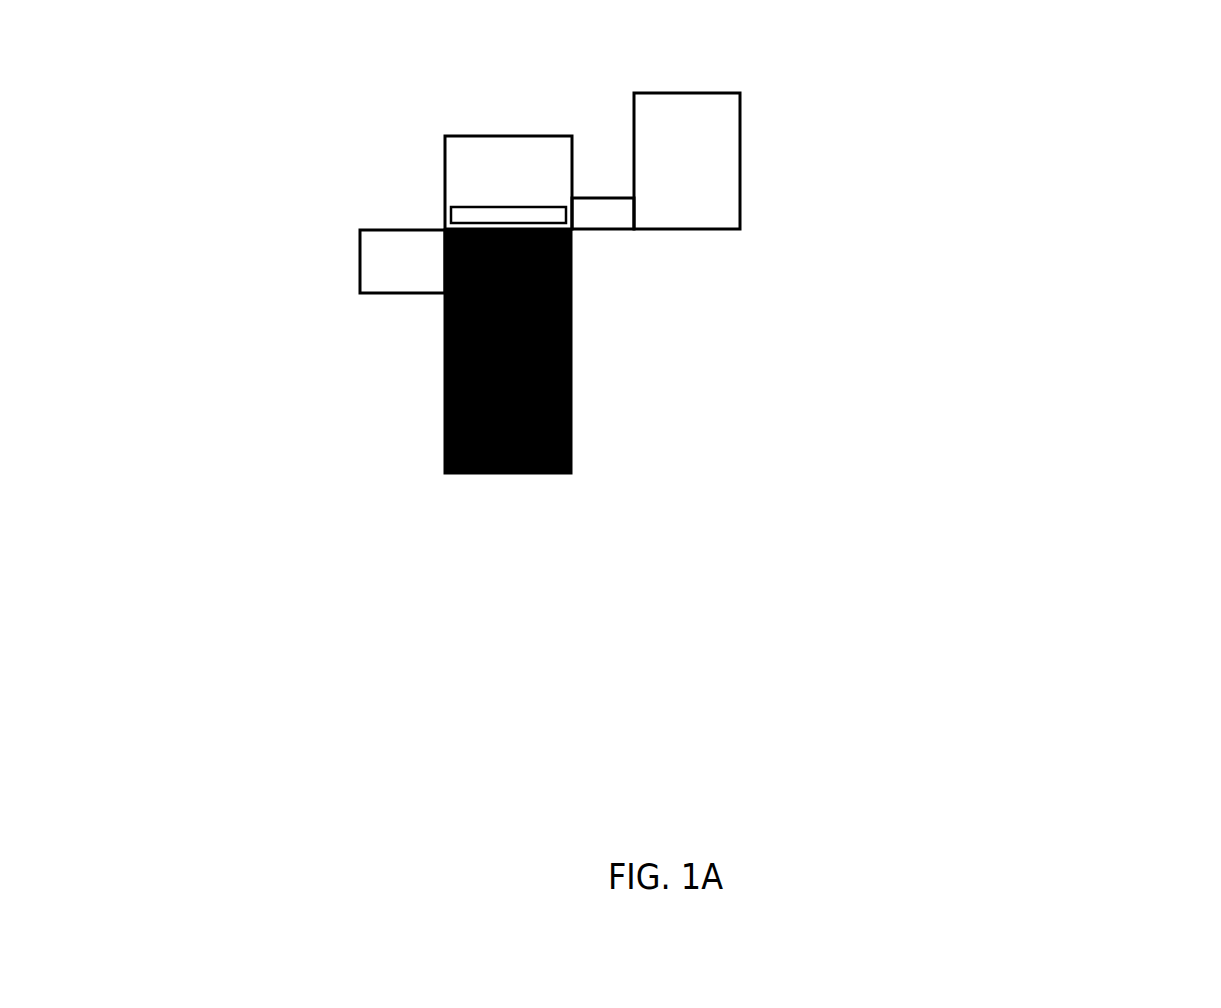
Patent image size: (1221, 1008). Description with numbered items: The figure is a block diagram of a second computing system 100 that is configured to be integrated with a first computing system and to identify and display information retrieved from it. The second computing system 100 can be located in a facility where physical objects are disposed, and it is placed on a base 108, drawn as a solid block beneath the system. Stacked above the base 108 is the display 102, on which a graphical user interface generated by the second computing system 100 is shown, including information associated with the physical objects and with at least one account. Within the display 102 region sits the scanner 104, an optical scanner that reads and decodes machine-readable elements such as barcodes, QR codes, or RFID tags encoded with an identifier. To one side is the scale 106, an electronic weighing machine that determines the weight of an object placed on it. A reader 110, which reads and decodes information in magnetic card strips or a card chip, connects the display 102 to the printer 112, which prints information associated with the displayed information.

The second computing system 100 is at (1123, 48).
The display 102 is at (443, 183).
The scanner 104 is at (449, 215).
The scale 106 is at (358, 262).
The base 108 is at (573, 350).
The reader 110 is at (602, 232).
The printer 112 is at (741, 160).